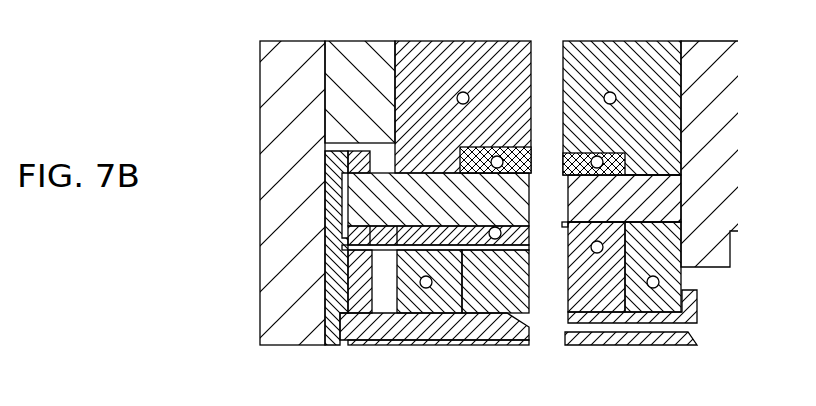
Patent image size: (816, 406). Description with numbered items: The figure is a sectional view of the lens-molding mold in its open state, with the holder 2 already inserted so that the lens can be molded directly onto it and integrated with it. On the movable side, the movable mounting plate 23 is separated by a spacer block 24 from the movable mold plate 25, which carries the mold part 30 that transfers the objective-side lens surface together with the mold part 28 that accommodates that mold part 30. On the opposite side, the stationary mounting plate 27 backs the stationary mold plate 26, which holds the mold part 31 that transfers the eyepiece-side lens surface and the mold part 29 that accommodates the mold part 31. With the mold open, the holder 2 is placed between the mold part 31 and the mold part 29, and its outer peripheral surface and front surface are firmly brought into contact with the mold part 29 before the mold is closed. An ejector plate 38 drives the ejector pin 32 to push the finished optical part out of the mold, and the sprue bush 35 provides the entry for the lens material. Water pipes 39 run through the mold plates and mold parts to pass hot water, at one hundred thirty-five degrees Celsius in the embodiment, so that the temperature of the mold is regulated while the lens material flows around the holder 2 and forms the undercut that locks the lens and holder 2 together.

The holder 2 is at (645, 176).
The movable mounting plate 23 is at (300, 52).
The spacer block 24 is at (368, 52).
The movable mold plate 25 is at (421, 60).
The stationary mold plate 26 is at (600, 55).
The stationary mounting plate 27 is at (715, 48).
The mold part accommodating the mold part 30 28 is at (520, 147).
The mold part accommodating the mold part 31 29 is at (583, 153).
The mold part transferring the objective-side lens surface 30 is at (400, 206).
The mold part transferring the eyepiece-side lens surface 31 is at (662, 200).
The ejector pin 32 is at (387, 250).
The sprue bush 35 is at (667, 345).
The ejector plate 38 is at (323, 292).
The water pipe 39 is at (498, 156).